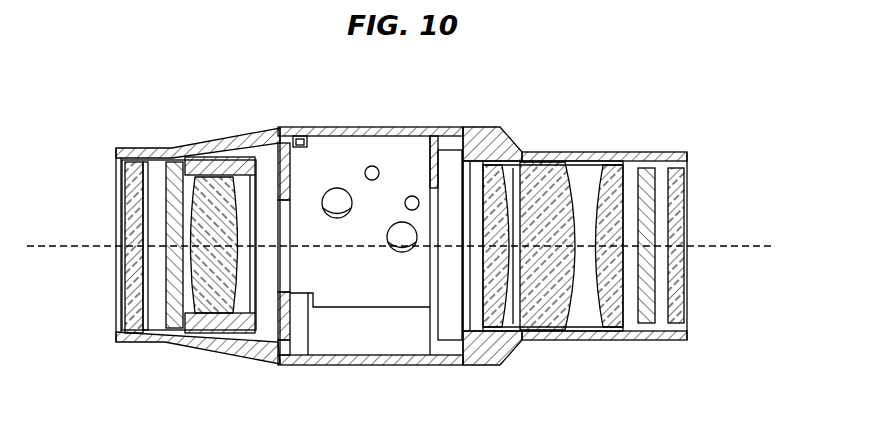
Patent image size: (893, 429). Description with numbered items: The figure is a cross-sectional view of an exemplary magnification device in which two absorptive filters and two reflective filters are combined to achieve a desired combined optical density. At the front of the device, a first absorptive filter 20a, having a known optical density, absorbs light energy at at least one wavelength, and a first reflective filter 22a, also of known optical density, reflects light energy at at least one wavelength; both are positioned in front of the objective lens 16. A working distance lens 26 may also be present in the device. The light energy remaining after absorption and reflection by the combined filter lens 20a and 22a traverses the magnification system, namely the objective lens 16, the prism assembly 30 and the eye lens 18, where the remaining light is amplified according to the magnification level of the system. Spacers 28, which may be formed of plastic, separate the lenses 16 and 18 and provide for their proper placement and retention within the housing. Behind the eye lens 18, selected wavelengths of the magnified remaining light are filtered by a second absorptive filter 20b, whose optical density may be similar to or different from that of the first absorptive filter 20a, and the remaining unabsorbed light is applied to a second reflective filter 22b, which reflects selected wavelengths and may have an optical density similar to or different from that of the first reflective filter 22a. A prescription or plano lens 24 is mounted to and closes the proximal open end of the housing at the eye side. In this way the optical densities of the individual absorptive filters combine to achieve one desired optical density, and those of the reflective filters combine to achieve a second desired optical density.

The objective lens 16 is at (219, 302).
The eye lens 18 is at (603, 312).
The first absorptive filter 20a is at (81, 247).
The first reflective filter 22a is at (130, 295).
The second absorptive filter 20b is at (689, 219).
The second reflective filter 22b is at (643, 170).
The prescription or plano lens 24 is at (678, 272).
The working distance lens 26 is at (170, 323).
The spacer 28 is at (244, 304).
The prism assembly 30 is at (370, 150).